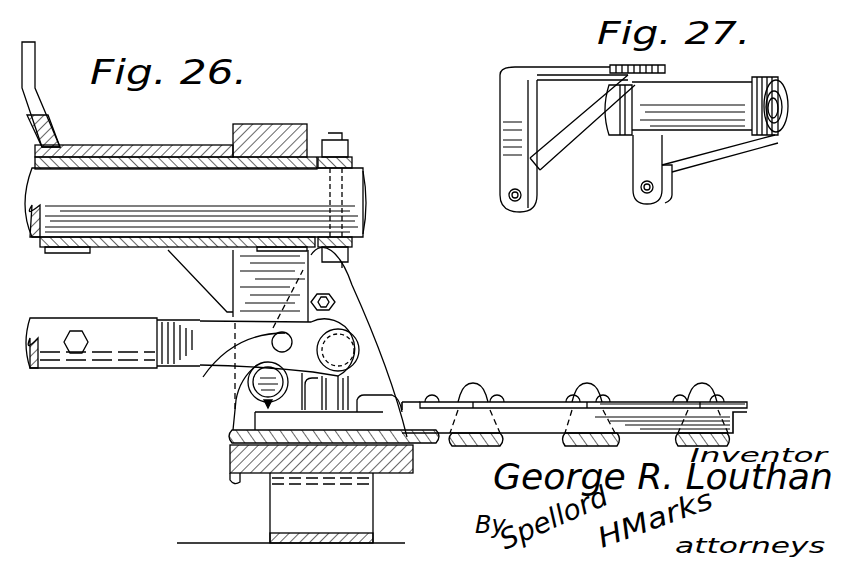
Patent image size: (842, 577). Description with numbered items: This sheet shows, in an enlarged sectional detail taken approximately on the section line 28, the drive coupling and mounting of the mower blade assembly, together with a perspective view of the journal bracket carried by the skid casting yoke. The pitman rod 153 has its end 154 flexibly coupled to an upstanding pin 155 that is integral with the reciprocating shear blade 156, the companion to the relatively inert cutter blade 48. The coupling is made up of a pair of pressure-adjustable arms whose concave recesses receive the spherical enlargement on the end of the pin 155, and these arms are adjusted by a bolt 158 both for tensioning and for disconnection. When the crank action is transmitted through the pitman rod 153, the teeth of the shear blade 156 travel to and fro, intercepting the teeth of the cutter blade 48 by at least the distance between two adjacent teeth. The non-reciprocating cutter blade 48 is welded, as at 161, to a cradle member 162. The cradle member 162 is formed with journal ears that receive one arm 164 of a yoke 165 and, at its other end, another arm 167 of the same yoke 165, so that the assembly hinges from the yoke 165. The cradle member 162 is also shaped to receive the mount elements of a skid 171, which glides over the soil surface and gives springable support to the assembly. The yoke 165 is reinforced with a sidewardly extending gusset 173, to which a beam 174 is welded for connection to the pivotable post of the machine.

In FIG. 26, the Fig. 28 section line 28 is at (465, 70).
In FIG. 26, the cutter blade 48 is at (574, 387).
In FIG. 26, the pitman rod 153 is at (50, 330).
In FIG. 26, the end of pitman rod 154 is at (345, 345).
In FIG. 26, the upstanding pin 155 is at (350, 387).
In FIG. 26, the reciprocating shear blade 156 is at (530, 400).
In FIG. 26, the bolt 158 is at (235, 352).
In FIG. 26, the weld 161 is at (366, 430).
In FIG. 26, the cradle member 162 is at (235, 457).
In FIG. 26, the yoke arm 164 is at (255, 278).
In FIG. 27, the yoke arm 164 is at (537, 177).
In FIG. 26, the yoke 165 is at (265, 140).
In FIG. 27, the yoke 165 is at (566, 58).
In FIG. 27, the yoke arm 167 is at (672, 178).
In FIG. 26, the skid 171 is at (283, 510).
In FIG. 26, the gusset 173 is at (183, 163).
In FIG. 27, the gusset 173 is at (717, 78).
In FIG. 26, the beam 174 is at (145, 182).
In FIG. 27, the beam 174 is at (787, 110).